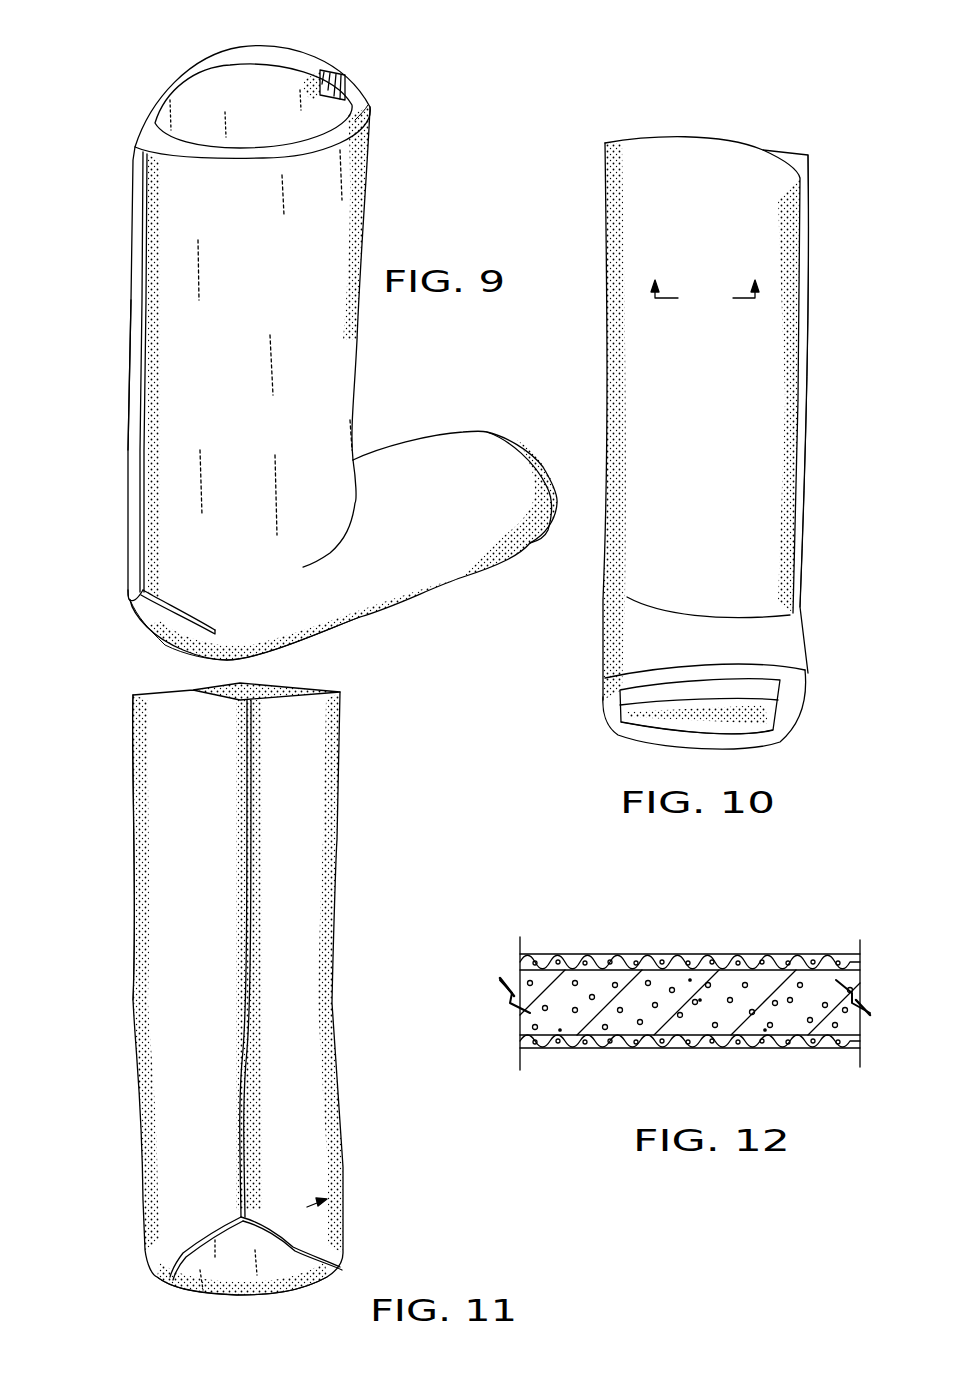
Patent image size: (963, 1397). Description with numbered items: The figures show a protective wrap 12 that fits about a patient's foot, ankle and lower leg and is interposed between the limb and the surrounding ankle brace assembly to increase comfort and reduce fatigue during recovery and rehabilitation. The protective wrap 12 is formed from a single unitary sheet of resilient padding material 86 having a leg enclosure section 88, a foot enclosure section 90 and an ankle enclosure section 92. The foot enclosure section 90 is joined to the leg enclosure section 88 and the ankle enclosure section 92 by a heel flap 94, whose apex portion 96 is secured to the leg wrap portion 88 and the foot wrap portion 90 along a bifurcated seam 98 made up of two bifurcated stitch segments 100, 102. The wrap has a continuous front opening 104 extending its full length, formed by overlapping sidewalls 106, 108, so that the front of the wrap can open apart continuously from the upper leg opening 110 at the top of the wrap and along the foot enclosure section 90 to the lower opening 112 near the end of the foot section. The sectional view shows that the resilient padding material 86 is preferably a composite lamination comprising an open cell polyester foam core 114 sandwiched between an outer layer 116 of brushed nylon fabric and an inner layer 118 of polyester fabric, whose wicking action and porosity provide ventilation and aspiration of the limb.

In FIG. 9, the protective wrap 12 is at (125, 130).
In FIG. 10, the protective wrap 12 is at (558, 147).
In FIG. 11, the protective wrap 12 is at (95, 722).
In FIG. 9, the resilient padding material 86 is at (185, 60).
In FIG. 12, the resilient padding material 86 is at (625, 952).
In FIG. 9, the leg enclosure section 88 is at (130, 310).
In FIG. 10, the leg enclosure section 88 is at (813, 345).
In FIG. 11, the leg enclosure section 88 is at (153, 893).
In FIG. 9, the foot enclosure section 90 is at (413, 563).
In FIG. 10, the foot enclosure section 90 is at (627, 653).
In FIG. 9, the ankle enclosure section 92 is at (217, 597).
In FIG. 9, the heel flap 94 is at (163, 620).
In FIG. 11, the heel flap 94 is at (200, 1293).
In FIG. 11, the apex portion 96 is at (253, 1214).
In FIG. 9, the bifurcated seam 98 is at (143, 407).
In FIG. 11, the bifurcated seam 98 is at (247, 1005).
In FIG. 9, the bifurcated stitch segment 100 is at (130, 600).
In FIG. 11, the bifurcated stitch segment 100 is at (210, 1230).
In FIG. 9, the bifurcated stitch segment 102 is at (180, 607).
In FIG. 11, the bifurcated stitch segment 102 is at (300, 1247).
In FIG. 10, the continuous front opening 104 is at (797, 318).
In FIG. 9, the overlapping sidewall 106 is at (327, 77).
In FIG. 9, the overlapping sidewall 108 is at (360, 90).
In FIG. 9, the upper leg opening 110 is at (257, 90).
In FIG. 10, the lower opening 112 is at (717, 717).
In FIG. 12, the open cell polyester foam core 114 is at (547, 1010).
In FIG. 12, the outer layer 116 is at (592, 955).
In FIG. 12, the inner layer 118 is at (607, 1037).